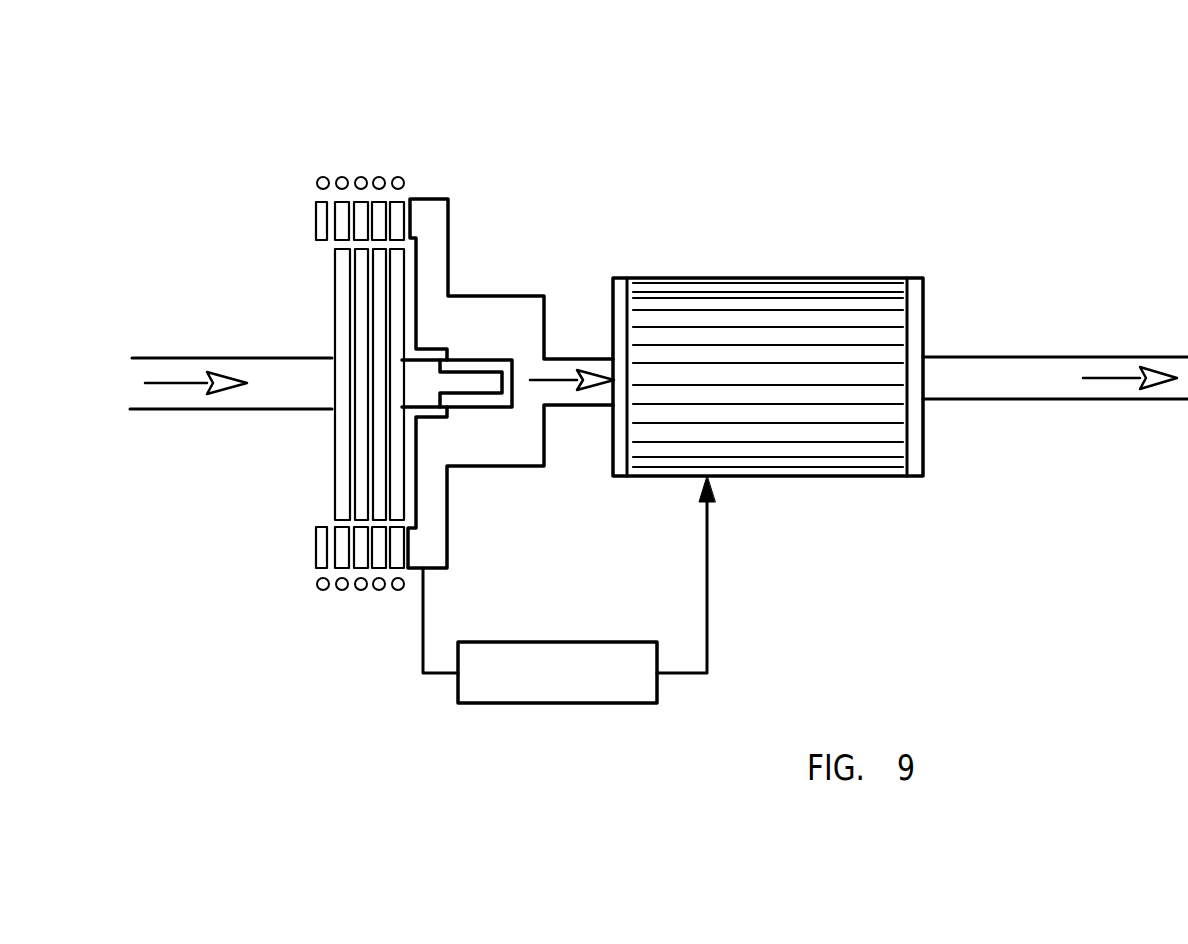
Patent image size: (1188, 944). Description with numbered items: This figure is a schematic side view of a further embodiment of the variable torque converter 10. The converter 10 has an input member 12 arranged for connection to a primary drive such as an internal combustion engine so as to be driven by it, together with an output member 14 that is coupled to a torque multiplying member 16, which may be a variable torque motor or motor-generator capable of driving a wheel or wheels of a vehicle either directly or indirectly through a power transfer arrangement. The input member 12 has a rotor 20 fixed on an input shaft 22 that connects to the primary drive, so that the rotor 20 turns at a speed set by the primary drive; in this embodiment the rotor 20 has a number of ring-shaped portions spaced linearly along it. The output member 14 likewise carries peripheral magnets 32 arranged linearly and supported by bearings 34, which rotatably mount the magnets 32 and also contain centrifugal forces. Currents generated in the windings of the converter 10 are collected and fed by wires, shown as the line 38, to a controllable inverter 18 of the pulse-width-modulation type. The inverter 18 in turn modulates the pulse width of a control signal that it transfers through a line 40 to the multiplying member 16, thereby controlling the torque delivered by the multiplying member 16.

The variable torque converter 10 is at (952, 162).
The input member 12 is at (269, 616).
The output member 14 is at (532, 238).
The torque multiplying member 16 is at (875, 262).
The controllable inverter 18 is at (577, 707).
The rotor 20 is at (322, 478).
The input shaft 22 is at (228, 412).
The peripheral magnets 32 is at (300, 222).
The bearings 34 is at (375, 172).
The line 38 is at (423, 638).
The line 40 is at (712, 633).